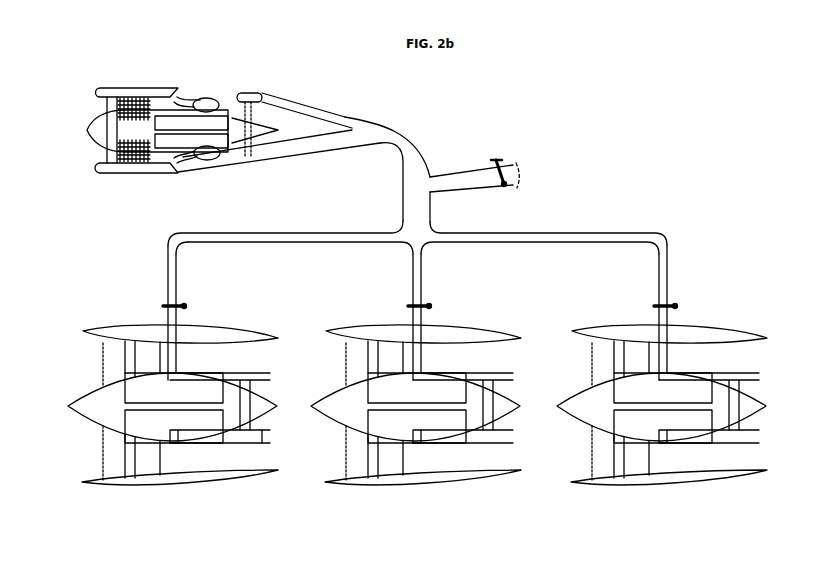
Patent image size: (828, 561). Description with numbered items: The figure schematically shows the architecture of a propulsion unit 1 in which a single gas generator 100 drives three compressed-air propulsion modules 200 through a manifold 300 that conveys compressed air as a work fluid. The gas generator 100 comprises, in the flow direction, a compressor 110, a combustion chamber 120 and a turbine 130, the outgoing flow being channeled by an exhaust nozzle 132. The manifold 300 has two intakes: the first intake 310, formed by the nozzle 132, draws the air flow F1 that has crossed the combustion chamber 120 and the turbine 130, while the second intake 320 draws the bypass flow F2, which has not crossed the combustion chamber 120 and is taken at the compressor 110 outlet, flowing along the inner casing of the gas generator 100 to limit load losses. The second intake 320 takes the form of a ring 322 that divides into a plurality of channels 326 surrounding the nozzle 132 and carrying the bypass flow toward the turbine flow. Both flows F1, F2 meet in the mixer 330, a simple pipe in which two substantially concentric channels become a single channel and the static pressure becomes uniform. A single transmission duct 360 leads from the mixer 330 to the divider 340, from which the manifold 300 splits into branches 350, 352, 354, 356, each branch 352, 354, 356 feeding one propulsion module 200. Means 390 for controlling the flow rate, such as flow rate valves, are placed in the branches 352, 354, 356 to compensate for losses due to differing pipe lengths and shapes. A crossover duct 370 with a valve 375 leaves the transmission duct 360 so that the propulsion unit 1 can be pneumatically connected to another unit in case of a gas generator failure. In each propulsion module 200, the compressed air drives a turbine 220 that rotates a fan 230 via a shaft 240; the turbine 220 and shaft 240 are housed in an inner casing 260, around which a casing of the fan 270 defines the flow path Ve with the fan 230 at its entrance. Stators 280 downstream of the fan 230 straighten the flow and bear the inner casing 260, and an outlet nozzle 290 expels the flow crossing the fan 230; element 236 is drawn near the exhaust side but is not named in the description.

The propulsion unit 1 is at (727, 178).
The gas generator 100 is at (70, 85).
The compressor 110 is at (140, 96).
The combustion chamber 120 is at (207, 97).
The turbine 130 is at (243, 101).
The exhaust nozzle 132 is at (268, 92).
The compressed-air propulsion module 200 is at (213, 508).
The turbine 220 is at (228, 407).
The fan 230 is at (110, 456).
The outlet 236 is at (260, 428).
The shaft 240 is at (185, 413).
The inner casing 260 is at (203, 442).
The casing of the fan 270 is at (110, 325).
The stators 280 is at (148, 462).
The outlet nozzle 290 is at (243, 336).
The manifold 300 is at (548, 199).
The first intake 310 is at (305, 105).
The second intake 320 is at (180, 92).
The ring 322 is at (182, 172).
The channels 326 is at (252, 171).
The mixer 330 is at (344, 144).
The divider 340 is at (437, 223).
The branches 350 is at (450, 312).
The branch 352 is at (178, 280).
The branch 354 is at (422, 280).
The branch 356 is at (668, 280).
The transmission duct 360 is at (427, 150).
The crossover duct 370 is at (468, 168).
The valve 375 is at (500, 158).
The means for controlling the flow rate 390 is at (185, 304).
The air flow F1 is at (356, 125).
The bypass flow F2 is at (230, 170).
The flow path Ve is at (218, 352).